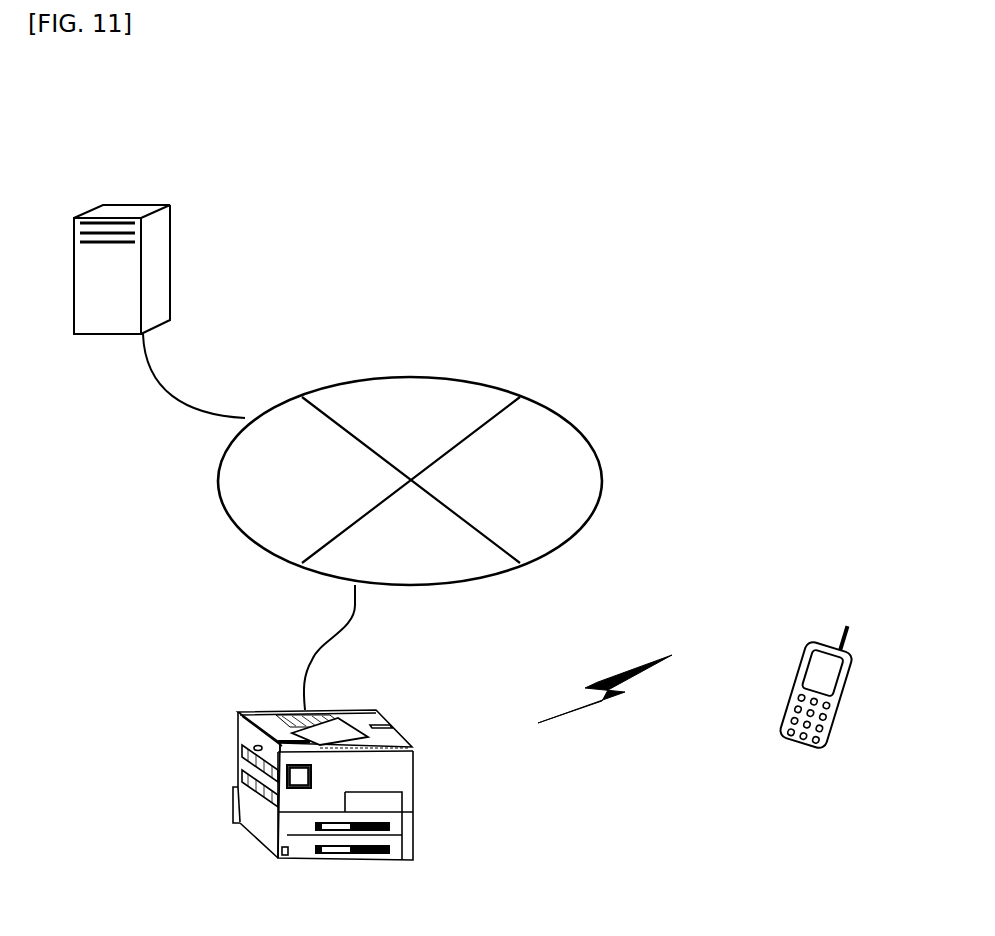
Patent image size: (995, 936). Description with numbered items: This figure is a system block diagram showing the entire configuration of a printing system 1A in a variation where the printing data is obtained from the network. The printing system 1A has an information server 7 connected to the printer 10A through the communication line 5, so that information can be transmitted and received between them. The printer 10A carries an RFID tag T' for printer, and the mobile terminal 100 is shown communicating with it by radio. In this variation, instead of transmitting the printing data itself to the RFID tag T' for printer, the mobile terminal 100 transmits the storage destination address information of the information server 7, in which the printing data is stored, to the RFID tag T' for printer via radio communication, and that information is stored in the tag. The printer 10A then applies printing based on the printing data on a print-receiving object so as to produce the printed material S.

The printing system 1A is at (371, 192).
The information server 7 is at (173, 223).
The communication line 5 is at (394, 377).
The printer 10A is at (252, 708).
The printed material S is at (336, 726).
The RFID tag for printer T' is at (260, 839).
The mobile terminal 100 is at (832, 725).